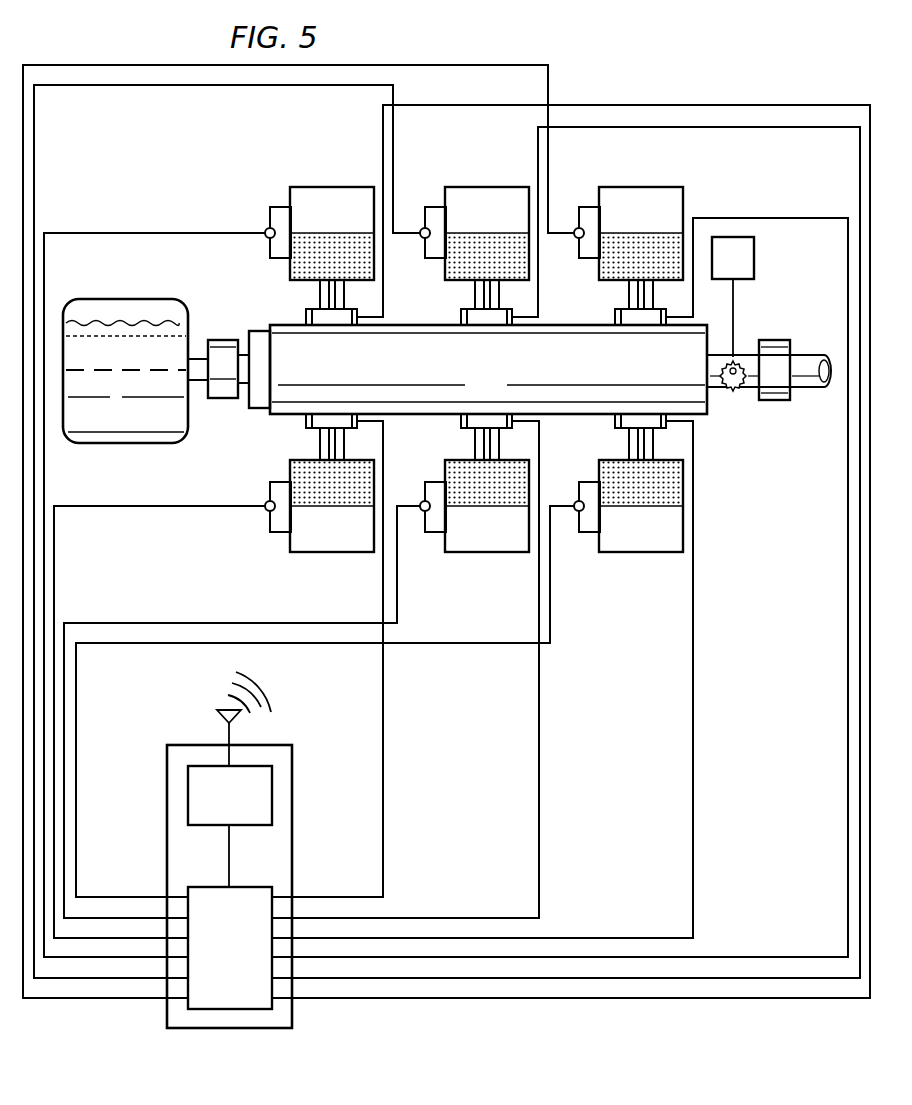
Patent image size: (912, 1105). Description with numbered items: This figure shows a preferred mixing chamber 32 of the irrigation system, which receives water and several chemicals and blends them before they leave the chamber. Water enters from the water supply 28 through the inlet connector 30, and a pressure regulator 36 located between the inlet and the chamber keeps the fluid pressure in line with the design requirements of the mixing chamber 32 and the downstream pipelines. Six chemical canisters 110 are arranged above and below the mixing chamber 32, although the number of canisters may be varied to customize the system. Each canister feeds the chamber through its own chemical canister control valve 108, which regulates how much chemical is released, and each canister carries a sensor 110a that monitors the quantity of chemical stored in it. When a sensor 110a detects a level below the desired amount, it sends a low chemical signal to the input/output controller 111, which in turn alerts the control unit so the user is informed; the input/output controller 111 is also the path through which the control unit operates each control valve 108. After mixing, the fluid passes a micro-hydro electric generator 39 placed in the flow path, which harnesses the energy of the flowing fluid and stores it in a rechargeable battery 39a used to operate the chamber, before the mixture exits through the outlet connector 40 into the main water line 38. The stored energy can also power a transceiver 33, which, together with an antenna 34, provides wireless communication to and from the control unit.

The water supply 28 is at (125, 444).
The inlet connector 30 is at (218, 339).
The mixing chamber 32 is at (500, 374).
The transceiver 33 is at (213, 826).
The antenna 34 is at (222, 710).
The pressure regulator 36 is at (256, 410).
The main water line 38 is at (808, 388).
The micro-hydro electric generator 39 is at (737, 380).
The rechargeable battery 39a is at (755, 256).
The outlet connector 40 is at (776, 339).
The chemical canister control valve 108 is at (306, 312).
The chemical canister 110 is at (332, 186).
The sensor 110a is at (278, 206).
The input/output controller 111 is at (248, 886).